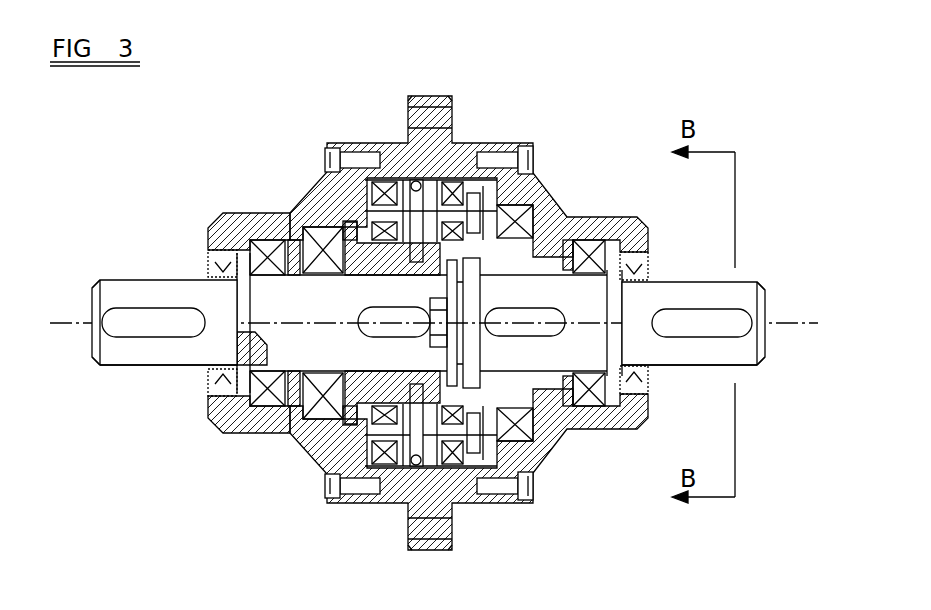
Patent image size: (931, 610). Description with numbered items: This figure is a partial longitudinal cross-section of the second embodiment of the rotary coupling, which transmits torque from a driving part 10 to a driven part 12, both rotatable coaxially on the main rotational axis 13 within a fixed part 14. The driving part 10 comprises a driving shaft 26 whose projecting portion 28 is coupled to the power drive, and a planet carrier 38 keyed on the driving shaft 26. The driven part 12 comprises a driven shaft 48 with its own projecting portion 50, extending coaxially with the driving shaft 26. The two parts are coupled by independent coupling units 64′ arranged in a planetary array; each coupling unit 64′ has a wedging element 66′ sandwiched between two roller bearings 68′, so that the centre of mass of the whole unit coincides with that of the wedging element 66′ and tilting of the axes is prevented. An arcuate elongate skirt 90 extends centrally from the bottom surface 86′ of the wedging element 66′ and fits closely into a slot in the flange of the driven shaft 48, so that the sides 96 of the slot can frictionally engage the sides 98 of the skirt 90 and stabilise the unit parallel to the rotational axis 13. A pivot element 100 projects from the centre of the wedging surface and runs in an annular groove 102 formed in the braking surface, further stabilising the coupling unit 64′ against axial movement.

The driving part 10 is at (752, 265).
The driven part 12 is at (121, 262).
The main rotational axis 13 is at (40, 305).
The fixed part 14 is at (502, 522).
The driving shaft 26 is at (668, 352).
The projecting portion 28 is at (738, 370).
The planet carrier 38 is at (498, 497).
The driven shaft 48 is at (187, 350).
The projecting portion 50 is at (97, 366).
The coupling unit 64′ is at (402, 177).
The wedging element 66′ is at (380, 477).
The roller bearings 68′ is at (342, 150).
The bottom surface 86′ is at (347, 430).
The skirt 90 is at (360, 380).
The sides of the slot 96 is at (498, 240).
The sides of the skirt 98 is at (510, 146).
The pivot element 100 is at (390, 168).
The annular groove 102 is at (410, 488).